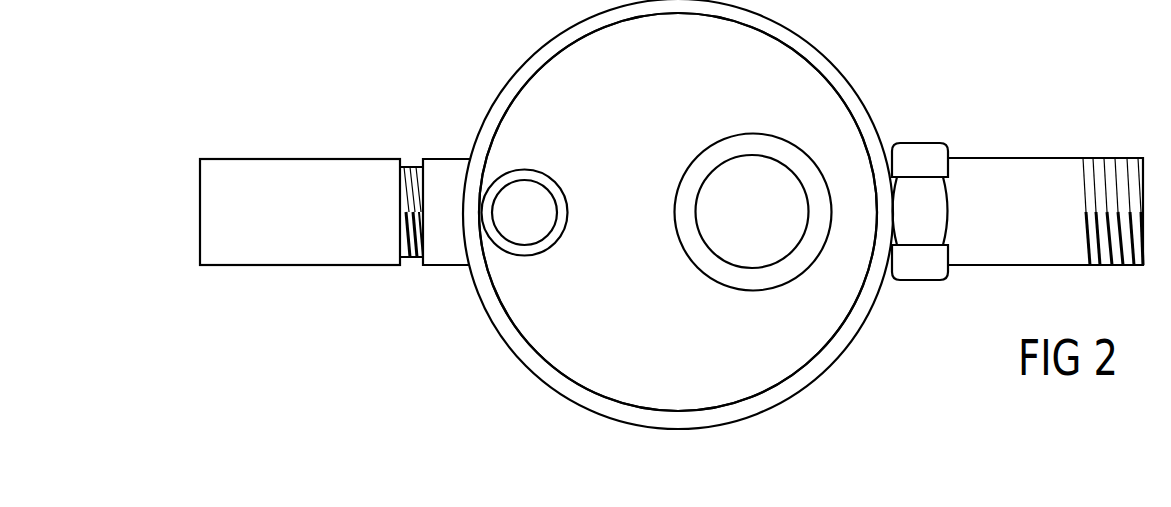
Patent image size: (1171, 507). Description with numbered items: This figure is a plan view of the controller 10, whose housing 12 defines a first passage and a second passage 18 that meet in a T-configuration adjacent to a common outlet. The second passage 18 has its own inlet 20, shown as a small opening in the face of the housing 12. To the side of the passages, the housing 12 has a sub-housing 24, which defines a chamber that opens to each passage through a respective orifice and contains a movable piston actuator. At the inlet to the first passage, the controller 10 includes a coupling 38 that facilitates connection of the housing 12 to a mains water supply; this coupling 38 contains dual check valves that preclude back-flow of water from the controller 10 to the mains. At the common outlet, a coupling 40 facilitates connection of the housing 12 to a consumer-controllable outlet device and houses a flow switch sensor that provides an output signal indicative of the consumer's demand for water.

The controller 10 is at (462, 104).
The housing 12 is at (442, 169).
The second passage 18 is at (523, 223).
The inlet 20 is at (528, 198).
The sub-housing 24 is at (755, 72).
The coupling 38 is at (1100, 170).
The coupling 40 is at (276, 185).